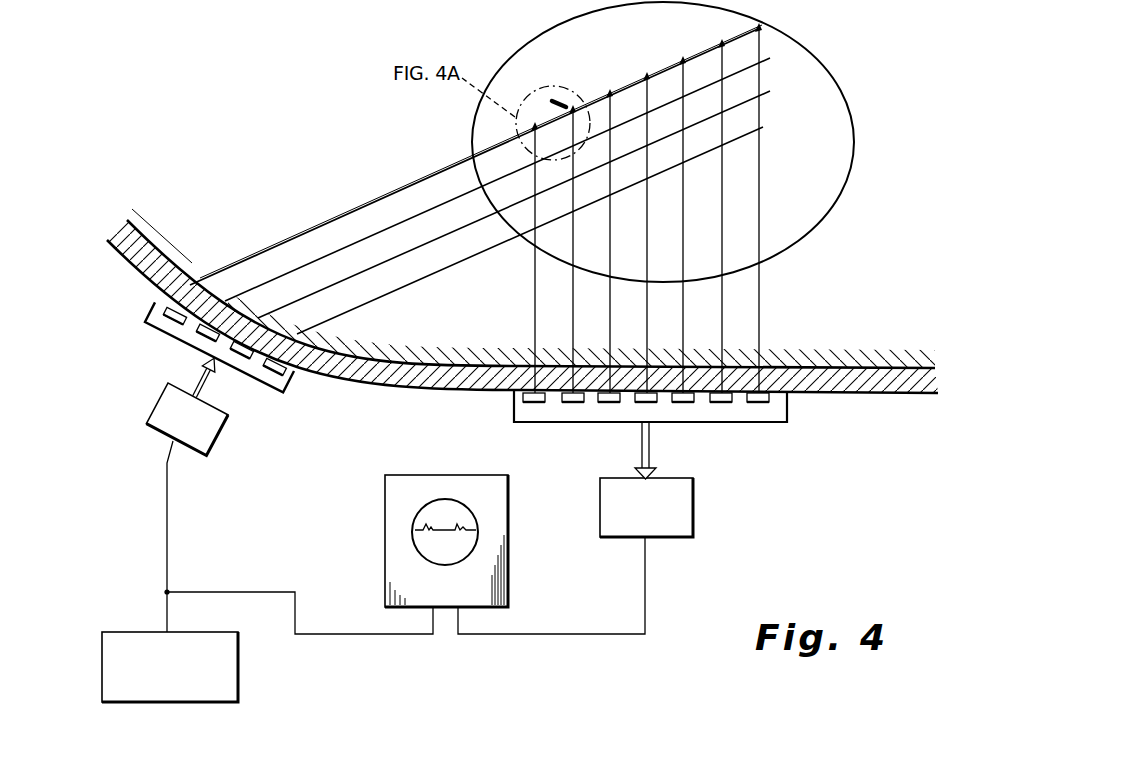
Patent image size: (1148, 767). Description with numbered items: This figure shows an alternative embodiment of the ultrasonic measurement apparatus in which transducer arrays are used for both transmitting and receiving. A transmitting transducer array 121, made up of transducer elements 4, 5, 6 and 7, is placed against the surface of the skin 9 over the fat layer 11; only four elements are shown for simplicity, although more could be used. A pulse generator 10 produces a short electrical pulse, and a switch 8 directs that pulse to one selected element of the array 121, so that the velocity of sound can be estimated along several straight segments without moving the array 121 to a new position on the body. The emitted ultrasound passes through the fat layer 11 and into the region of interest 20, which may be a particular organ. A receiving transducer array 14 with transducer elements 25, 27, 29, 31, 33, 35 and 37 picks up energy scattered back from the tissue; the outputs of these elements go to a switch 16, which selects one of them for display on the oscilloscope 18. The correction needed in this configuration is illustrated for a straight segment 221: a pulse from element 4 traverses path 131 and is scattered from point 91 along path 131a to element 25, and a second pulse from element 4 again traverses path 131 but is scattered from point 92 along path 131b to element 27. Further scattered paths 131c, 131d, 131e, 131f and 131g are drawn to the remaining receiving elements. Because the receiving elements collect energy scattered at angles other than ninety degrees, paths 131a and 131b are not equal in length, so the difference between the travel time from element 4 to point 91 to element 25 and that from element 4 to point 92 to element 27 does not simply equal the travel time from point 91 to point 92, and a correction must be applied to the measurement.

The transducer element 4 is at (167, 323).
The transducer element 5 is at (203, 331).
The transducer element 6 is at (240, 357).
The transducer element 7 is at (270, 371).
The switch 8 is at (217, 457).
The skin 9 is at (126, 286).
The pulse generator 10 is at (238, 680).
The fat layer 11 is at (152, 258).
The receiving transducer array 14 is at (787, 423).
The switch 16 is at (694, 525).
The oscilloscope 18 is at (508, 588).
The region of interest 20 is at (862, 171).
The transducer element 25 is at (533, 404).
The transducer element 27 is at (570, 404).
The transducer element 29 is at (608, 404).
The transducer element 31 is at (643, 404).
The transducer element 33 is at (687, 404).
The transducer element 35 is at (724, 404).
The transducer element 37 is at (760, 404).
The point 91 is at (532, 131).
The point 92 is at (572, 116).
The transducer array 121 is at (138, 335).
The path 131 is at (420, 178).
The path 131a is at (535, 295).
The path 131b is at (573, 318).
The reflected beam path 131c is at (610, 282).
The reflected beam path 131d is at (647, 337).
The inner coating layer 131e is at (760, 345).
The reflected beam path 131f is at (723, 298).
The reflected beam path 131g is at (757, 320).
The straight segment 221 is at (560, 103).